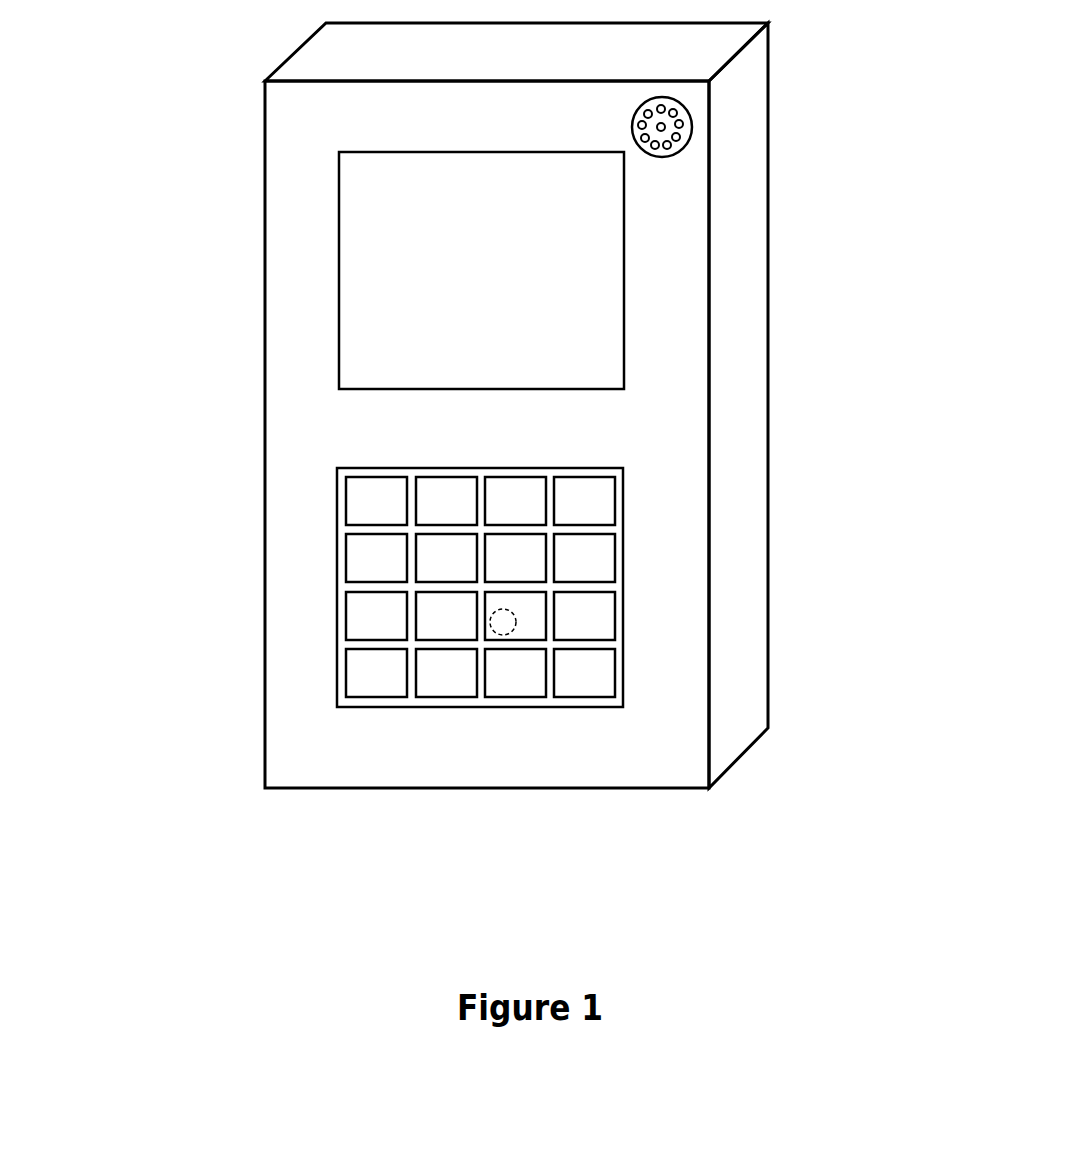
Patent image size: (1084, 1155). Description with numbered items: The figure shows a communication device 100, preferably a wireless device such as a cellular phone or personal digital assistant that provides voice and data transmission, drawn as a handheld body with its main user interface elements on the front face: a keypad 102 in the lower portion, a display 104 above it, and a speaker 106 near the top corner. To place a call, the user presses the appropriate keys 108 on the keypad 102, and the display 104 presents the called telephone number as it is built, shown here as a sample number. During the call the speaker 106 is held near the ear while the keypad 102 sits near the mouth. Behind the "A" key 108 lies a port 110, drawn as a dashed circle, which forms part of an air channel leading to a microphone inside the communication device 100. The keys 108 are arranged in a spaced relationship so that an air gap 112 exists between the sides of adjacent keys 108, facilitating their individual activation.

The communication device 100 is at (591, 474).
The keypad 102 is at (445, 631).
The display 104 is at (362, 296).
The speaker 106 is at (688, 117).
The key 108 is at (495, 600).
The port 110 is at (505, 636).
The air gap 112 is at (687, 677).